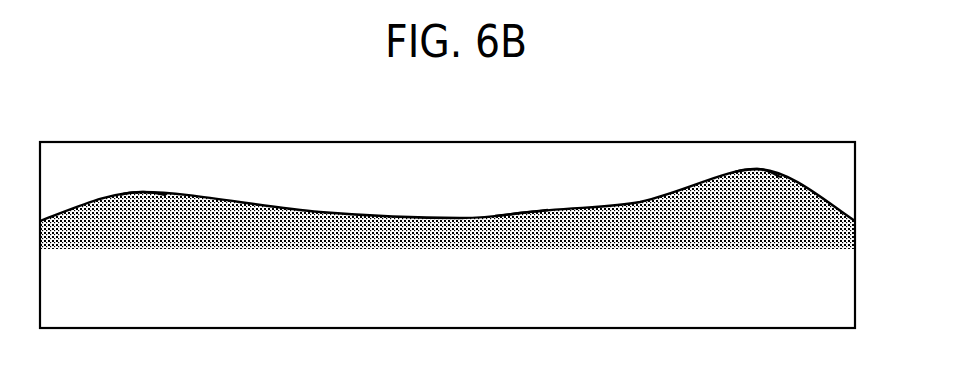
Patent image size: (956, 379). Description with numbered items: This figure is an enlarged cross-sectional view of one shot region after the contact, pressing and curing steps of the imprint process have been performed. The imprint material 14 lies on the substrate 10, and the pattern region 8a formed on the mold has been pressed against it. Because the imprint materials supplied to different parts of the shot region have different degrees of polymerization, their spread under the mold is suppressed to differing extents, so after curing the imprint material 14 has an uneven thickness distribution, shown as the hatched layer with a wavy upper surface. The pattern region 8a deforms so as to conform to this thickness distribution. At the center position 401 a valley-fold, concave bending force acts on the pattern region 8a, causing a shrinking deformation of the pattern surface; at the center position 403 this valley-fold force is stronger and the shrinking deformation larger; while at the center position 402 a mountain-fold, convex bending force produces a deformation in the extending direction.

The substrate 10 is at (840, 300).
The imprint material 14 is at (845, 229).
The pattern region 8a is at (841, 184).
The center position 401 is at (143, 192).
The center position 402 is at (519, 212).
The center position 403 is at (757, 168).